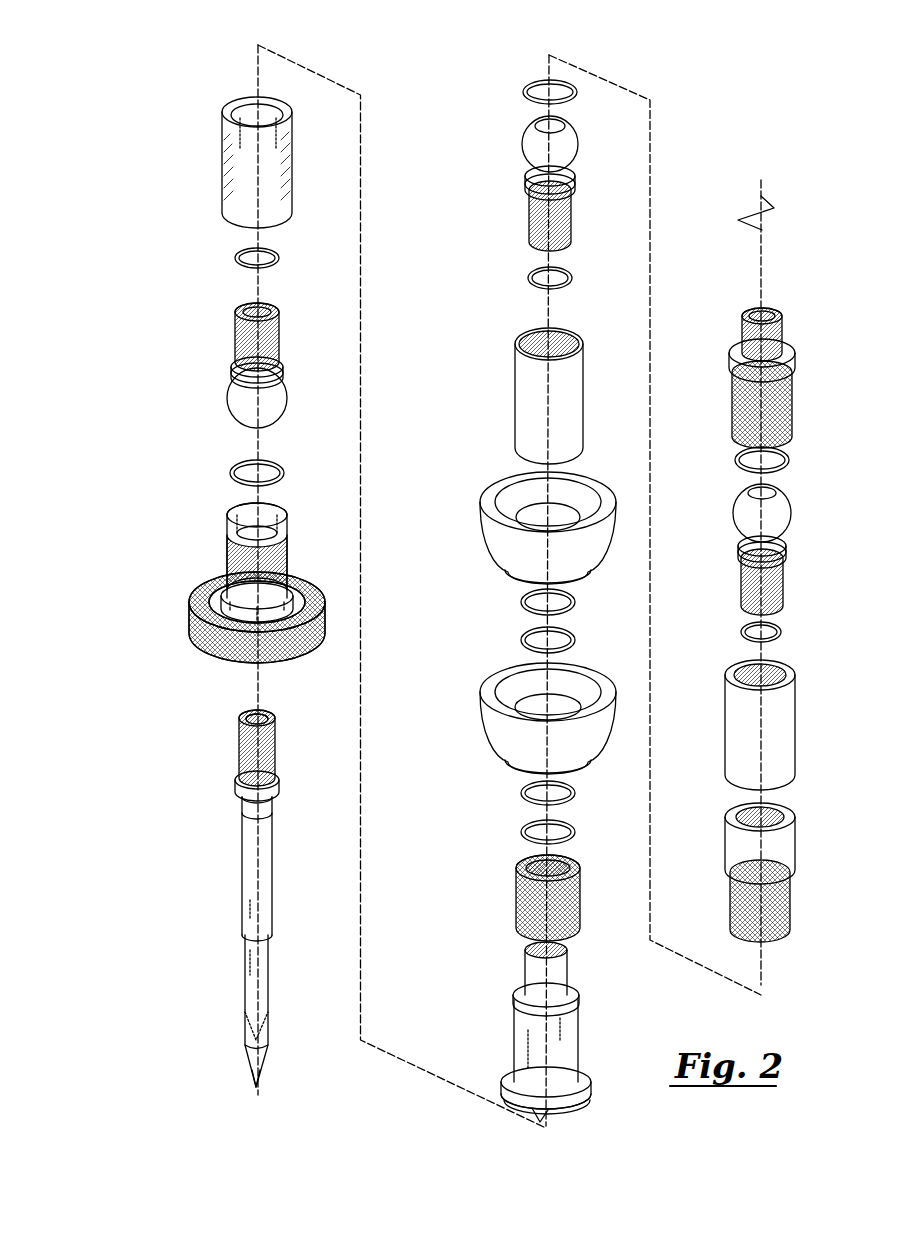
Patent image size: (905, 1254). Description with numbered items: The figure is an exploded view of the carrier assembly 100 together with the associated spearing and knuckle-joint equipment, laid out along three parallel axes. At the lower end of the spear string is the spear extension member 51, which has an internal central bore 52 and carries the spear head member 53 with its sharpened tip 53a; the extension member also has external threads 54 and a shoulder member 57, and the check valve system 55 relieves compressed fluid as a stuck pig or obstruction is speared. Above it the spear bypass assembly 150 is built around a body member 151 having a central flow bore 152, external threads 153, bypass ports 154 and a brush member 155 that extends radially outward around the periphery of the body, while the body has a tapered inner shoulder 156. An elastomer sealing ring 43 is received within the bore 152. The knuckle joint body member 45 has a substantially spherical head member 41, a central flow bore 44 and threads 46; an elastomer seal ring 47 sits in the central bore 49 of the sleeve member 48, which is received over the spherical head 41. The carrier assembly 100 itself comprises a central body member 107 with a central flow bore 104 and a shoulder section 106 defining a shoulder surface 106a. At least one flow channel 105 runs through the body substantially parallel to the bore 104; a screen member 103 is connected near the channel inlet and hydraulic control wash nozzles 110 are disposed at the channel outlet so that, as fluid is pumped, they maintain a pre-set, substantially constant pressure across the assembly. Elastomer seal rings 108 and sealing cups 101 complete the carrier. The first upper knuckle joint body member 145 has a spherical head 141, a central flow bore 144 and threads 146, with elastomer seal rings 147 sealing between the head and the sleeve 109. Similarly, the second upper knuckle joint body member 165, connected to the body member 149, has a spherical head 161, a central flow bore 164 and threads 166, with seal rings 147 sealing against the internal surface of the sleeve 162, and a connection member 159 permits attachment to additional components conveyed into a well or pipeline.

The carrier assembly 100 is at (110, 125).
The substantially spherical head member 41 is at (287, 400).
The elastomer sealing ring 43 is at (277, 466).
The central flow bore 44 is at (262, 310).
The knuckle joint body member 45 is at (232, 372).
The threads 46 is at (235, 332).
The elastomer seal ring 47 is at (273, 252).
The sleeve member 48 is at (223, 162).
The central bore 49 is at (255, 112).
The spear extension member 51 is at (240, 864).
The internal central bore 52 is at (268, 714).
The spear head member 53 is at (243, 1058).
The sharpened tip 53a is at (259, 1085).
The external threads 54 is at (240, 752).
The check valve system 55 is at (250, 716).
The shoulder member 57 is at (280, 780).
The spear bypass assembly 150 is at (190, 562).
The body member 151 is at (290, 590).
The central flow bore 152 is at (266, 527).
The external threads 153 is at (227, 547).
The bypass ports 154 is at (322, 638).
The brush member 155 is at (194, 598).
The tapered inner shoulder 156 is at (238, 510).
The sealing cups 101 is at (484, 542).
The screen member 103 is at (514, 904).
The central flow bore 104 is at (524, 952).
The flow channel 105 is at (514, 993).
The shoulder section 106 is at (512, 1065).
The shoulder surface 106a is at (593, 1090).
The central body member 107 is at (580, 1018).
The elastomer seal rings 108 is at (522, 601).
The sleeve 109 is at (583, 380).
The hydraulic control wash nozzles 110 is at (512, 1112).
The substantially spherical head member 141 is at (576, 142).
The central flow bore 144 is at (536, 126).
The first upper knuckle joint body member 145 is at (527, 182).
The threads 146 is at (529, 216).
The elastomer seal rings 147 is at (538, 84).
The body member 149 is at (726, 838).
The connection member 159 is at (740, 355).
The substantially spherical head member 161 is at (786, 506).
The sleeve 162 is at (726, 724).
The central flow bore 164 is at (750, 497).
The second upper knuckle joint body member 165 is at (740, 548).
The threads 166 is at (784, 576).